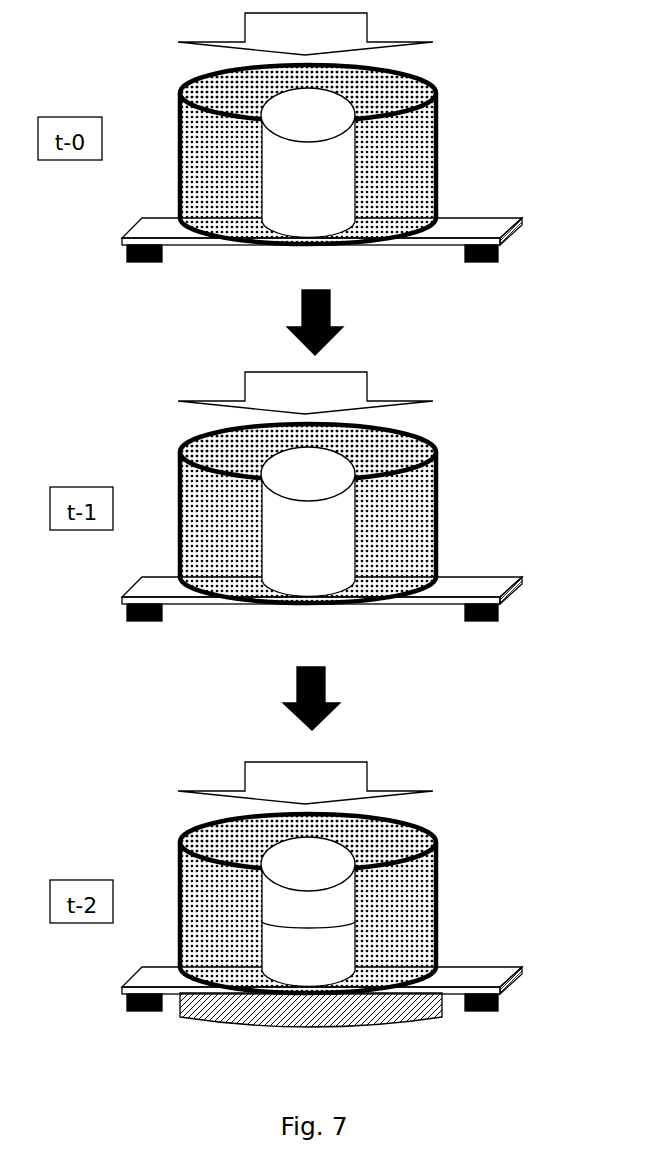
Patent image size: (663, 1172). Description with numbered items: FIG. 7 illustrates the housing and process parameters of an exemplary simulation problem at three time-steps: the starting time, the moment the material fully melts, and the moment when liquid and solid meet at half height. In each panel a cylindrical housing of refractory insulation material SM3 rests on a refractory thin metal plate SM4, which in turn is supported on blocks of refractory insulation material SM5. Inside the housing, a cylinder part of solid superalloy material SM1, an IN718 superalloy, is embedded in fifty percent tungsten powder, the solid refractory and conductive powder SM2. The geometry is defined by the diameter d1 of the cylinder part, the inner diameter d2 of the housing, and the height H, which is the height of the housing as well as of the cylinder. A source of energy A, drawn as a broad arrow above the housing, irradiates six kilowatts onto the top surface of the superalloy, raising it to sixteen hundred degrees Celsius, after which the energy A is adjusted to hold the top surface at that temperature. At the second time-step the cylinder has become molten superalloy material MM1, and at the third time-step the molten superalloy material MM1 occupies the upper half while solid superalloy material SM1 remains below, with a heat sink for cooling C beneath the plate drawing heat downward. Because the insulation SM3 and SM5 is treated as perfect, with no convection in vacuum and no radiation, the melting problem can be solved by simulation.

The solid superalloy material SM1 is at (308, 550).
The solid refractory and conductive powder SM2 is at (390, 147).
The refractory insulation material SM3 is at (438, 153).
The refractory thin metal plate SM4 is at (467, 231).
The refractory insulation material SM5 is at (481, 265).
The molten superalloy material MM1 is at (308, 701).
The diameter of the cylinder part d1 is at (264, 112).
The inner diameter of the housing d2 is at (433, 94).
The height of the housing H is at (170, 218).
The source of energy A is at (305, 408).
The heat sink for cooling C is at (215, 1028).